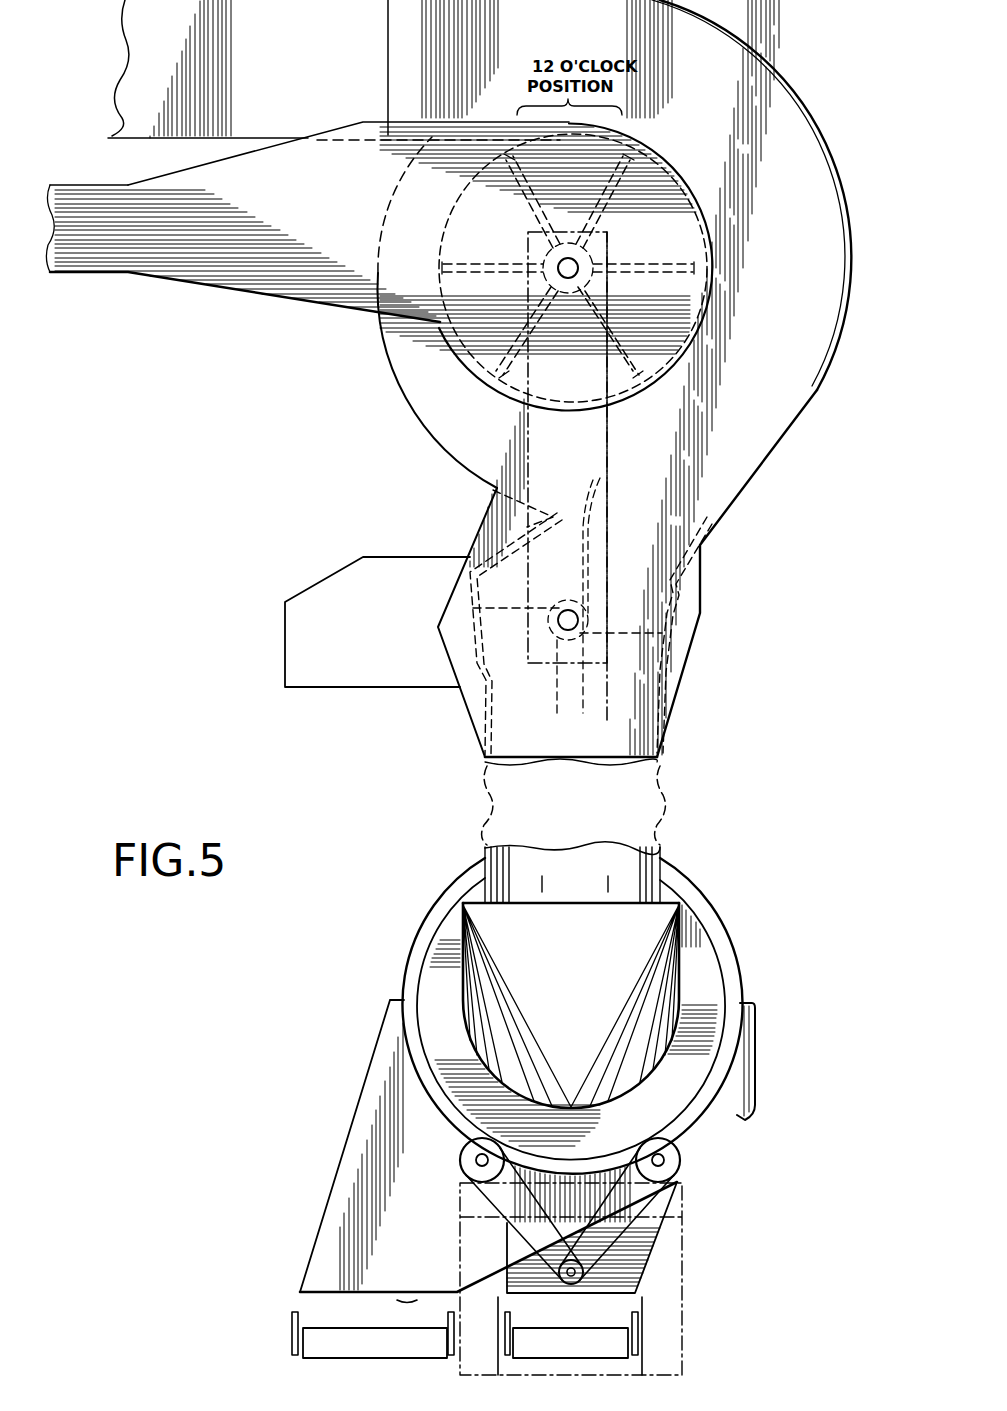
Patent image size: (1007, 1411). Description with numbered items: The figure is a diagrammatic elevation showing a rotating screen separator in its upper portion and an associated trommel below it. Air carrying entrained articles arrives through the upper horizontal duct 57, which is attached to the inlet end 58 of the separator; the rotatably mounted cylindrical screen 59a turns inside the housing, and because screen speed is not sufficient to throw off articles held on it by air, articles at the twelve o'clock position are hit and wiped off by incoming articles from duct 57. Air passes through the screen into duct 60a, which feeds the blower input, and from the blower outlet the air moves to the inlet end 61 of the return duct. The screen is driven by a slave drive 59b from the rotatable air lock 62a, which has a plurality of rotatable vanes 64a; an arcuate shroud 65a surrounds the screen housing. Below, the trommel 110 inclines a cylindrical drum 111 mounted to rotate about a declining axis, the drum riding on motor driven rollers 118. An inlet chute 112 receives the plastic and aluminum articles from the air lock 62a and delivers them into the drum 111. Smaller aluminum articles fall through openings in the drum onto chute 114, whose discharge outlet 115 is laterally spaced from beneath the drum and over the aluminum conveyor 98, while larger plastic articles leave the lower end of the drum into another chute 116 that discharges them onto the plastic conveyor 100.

The upper horizontal duct 57 is at (130, 78).
The inlet end 58 is at (388, 49).
The inlet end of the duct 61 is at (230, 286).
The duct 60a is at (676, 313).
The arcuate shroud 65a is at (788, 100).
The cylindrical screen 59a is at (710, 252).
The rotor axis 59b is at (608, 446).
The rotatable vanes 64a is at (567, 581).
The rotatable air lock 62a is at (686, 602).
The trommel 110 is at (330, 995).
The cylindrical drum 111 is at (424, 940).
The inlet chute 112 is at (683, 932).
The chute 114 is at (320, 1213).
The motor driven rollers 118 is at (460, 1153).
The chute 116 is at (625, 1310).
The discharge outlet 115 is at (423, 1258).
The aluminum conveyor 98 is at (361, 1323).
The plastic conveyor 100 is at (592, 1327).